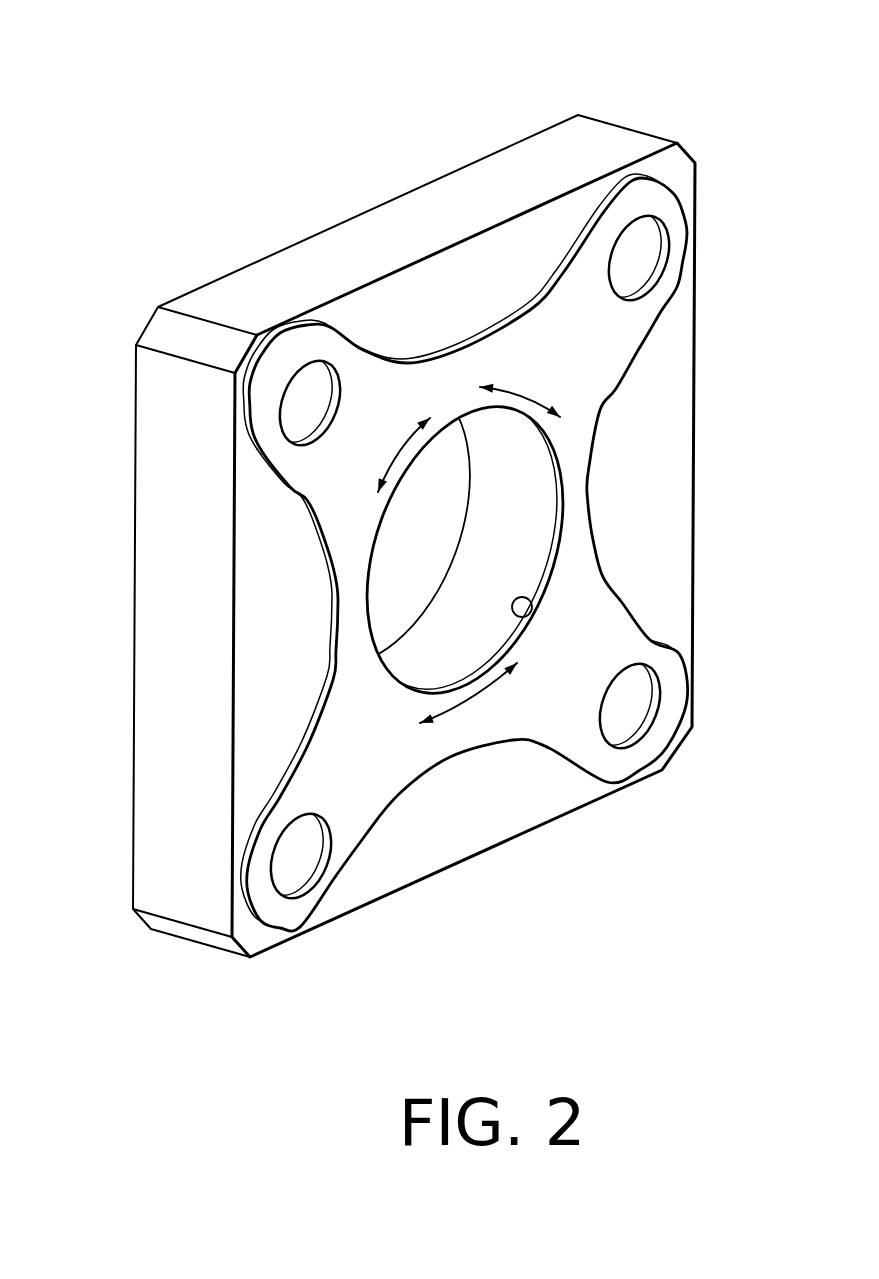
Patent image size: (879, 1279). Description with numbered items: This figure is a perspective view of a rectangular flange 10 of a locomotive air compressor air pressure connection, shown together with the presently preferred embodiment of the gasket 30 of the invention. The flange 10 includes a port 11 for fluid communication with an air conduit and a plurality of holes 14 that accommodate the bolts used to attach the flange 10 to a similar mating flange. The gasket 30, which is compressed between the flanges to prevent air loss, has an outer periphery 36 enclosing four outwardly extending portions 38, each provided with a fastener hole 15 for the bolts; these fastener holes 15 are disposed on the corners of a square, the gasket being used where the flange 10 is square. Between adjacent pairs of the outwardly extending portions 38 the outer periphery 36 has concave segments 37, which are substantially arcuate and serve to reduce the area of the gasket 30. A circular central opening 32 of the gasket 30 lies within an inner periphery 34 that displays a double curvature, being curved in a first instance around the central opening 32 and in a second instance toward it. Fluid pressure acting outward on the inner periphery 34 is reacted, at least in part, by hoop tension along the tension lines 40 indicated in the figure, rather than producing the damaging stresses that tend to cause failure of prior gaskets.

The flange 10 is at (608, 132).
The port 11 is at (530, 510).
The holes 14 is at (643, 257).
The fastener holes 15 is at (328, 402).
The gasket 30 is at (318, 587).
The central opening 32 is at (530, 563).
The inner periphery 34 is at (527, 620).
The outer periphery 36 is at (250, 397).
The concave segments 37 is at (487, 340).
The outwardly extending portions 38 is at (622, 320).
The tension lines 40 is at (531, 390).